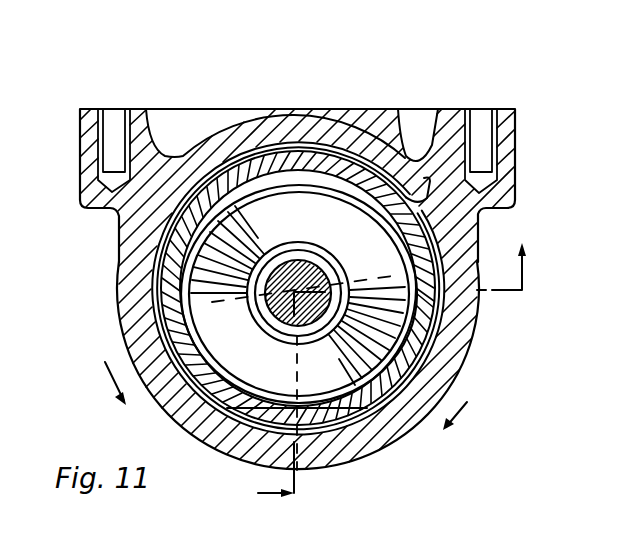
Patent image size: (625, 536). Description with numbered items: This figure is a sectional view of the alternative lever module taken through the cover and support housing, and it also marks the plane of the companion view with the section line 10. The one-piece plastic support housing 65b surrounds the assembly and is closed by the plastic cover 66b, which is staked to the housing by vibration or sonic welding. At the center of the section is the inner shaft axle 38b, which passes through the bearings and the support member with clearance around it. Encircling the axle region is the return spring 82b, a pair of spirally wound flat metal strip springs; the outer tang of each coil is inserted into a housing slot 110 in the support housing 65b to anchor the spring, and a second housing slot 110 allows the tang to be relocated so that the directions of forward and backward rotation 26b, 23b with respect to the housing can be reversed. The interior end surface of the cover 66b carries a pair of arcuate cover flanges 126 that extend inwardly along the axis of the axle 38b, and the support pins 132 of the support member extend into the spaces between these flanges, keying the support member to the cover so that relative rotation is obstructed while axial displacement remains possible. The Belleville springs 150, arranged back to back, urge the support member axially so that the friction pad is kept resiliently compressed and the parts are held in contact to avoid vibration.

The section line 10- 10 is at (387, 376).
The backward rotation 23b is at (463, 412).
The forward rotation 26b is at (105, 372).
The inner shaft axle 38b is at (279, 322).
The support housing 65b is at (273, 116).
The cover 66b is at (147, 296).
The return spring 82b is at (400, 112).
The housing slot 110 is at (428, 150).
The cover flanges 126 is at (460, 334).
The support pins 132 is at (347, 155).
The Belleville springs 150 is at (207, 326).